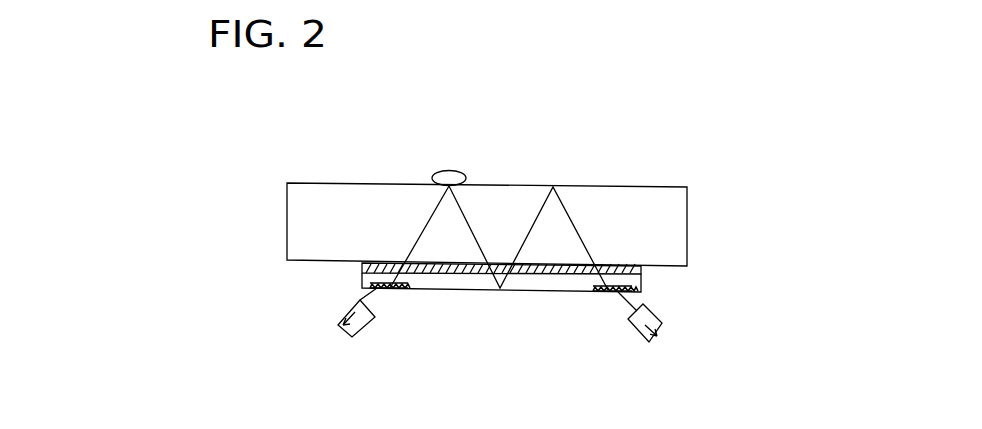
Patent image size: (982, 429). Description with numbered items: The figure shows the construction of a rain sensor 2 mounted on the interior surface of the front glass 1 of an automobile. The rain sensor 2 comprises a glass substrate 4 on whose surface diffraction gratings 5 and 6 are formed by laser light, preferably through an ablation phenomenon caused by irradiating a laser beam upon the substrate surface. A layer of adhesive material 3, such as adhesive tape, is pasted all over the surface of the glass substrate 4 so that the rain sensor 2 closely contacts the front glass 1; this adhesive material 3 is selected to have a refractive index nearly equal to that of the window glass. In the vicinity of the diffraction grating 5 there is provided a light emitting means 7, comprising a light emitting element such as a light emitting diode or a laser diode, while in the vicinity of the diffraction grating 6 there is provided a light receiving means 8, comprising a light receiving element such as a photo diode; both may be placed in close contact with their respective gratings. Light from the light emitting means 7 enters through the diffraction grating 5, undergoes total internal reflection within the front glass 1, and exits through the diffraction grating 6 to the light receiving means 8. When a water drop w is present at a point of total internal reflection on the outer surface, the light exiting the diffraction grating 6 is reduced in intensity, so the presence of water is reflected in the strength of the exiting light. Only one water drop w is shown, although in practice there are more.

The front window glass 1 is at (299, 220).
The rain sensor 2 is at (429, 292).
The adhesive material 3 is at (362, 270).
The glass substrate 4 is at (444, 290).
The diffraction grating 5 is at (602, 292).
The diffraction grating 6 is at (397, 290).
The light emitting means 7 is at (653, 330).
The light receiving means 8 is at (340, 323).
The water drop w is at (449, 172).